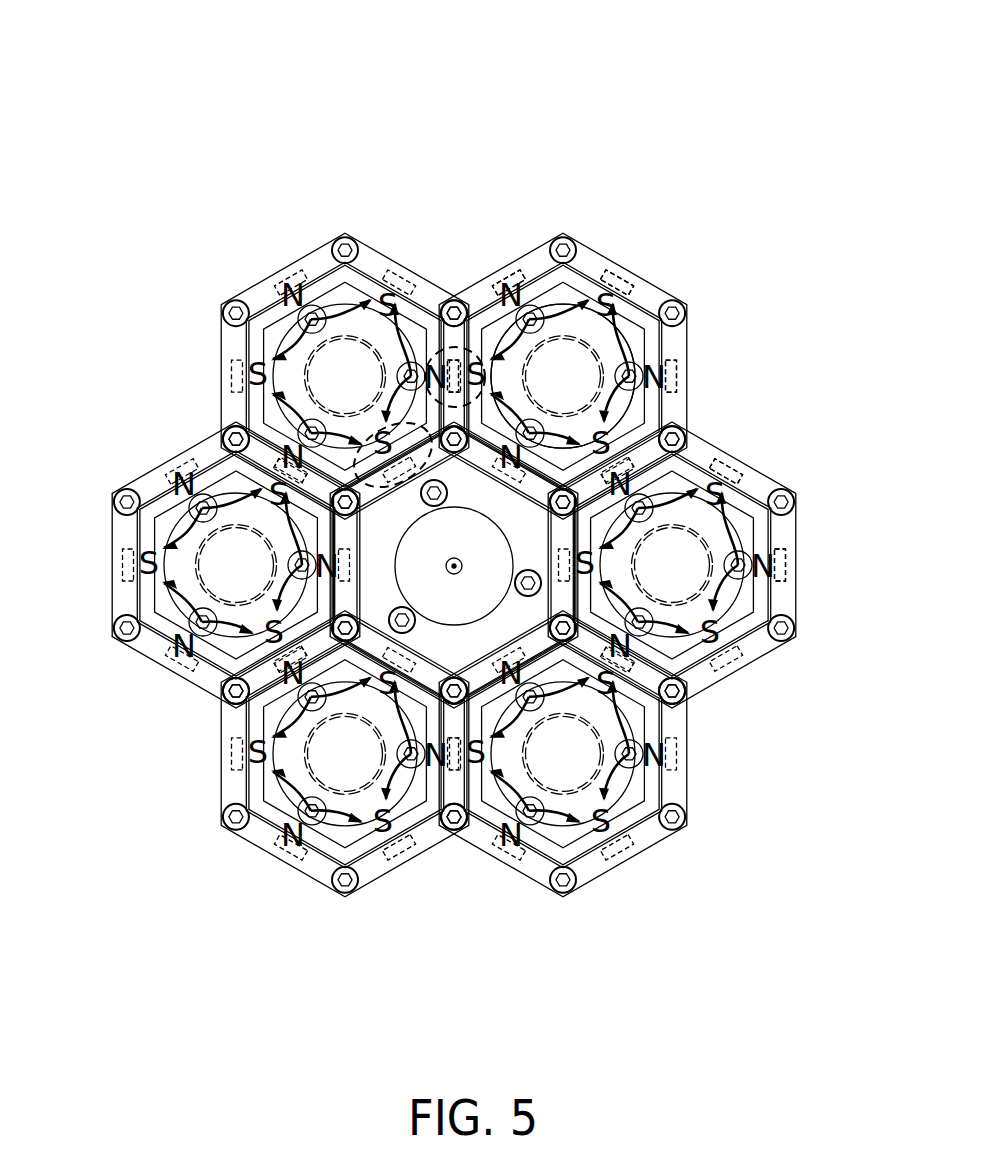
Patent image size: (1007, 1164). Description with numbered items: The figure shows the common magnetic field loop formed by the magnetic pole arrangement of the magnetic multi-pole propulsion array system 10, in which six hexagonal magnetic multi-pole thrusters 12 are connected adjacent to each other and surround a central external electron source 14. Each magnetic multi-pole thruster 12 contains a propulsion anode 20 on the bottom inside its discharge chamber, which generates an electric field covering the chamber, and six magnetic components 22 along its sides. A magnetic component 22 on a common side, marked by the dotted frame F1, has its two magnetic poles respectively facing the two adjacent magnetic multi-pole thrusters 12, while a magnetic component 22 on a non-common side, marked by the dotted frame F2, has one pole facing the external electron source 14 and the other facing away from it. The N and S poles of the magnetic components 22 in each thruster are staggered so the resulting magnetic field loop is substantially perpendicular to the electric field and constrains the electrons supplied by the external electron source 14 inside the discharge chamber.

The magnetic multi-pole propulsion array system 10 is at (172, 77).
The magnetic multi-pole thruster 12 is at (262, 270).
The external electron source 14 is at (480, 588).
The propulsion anode 20 is at (622, 355).
The magnetic component 22 is at (509, 275).
The dotted frame F1 is at (440, 360).
The dotted frame F2 is at (365, 457).